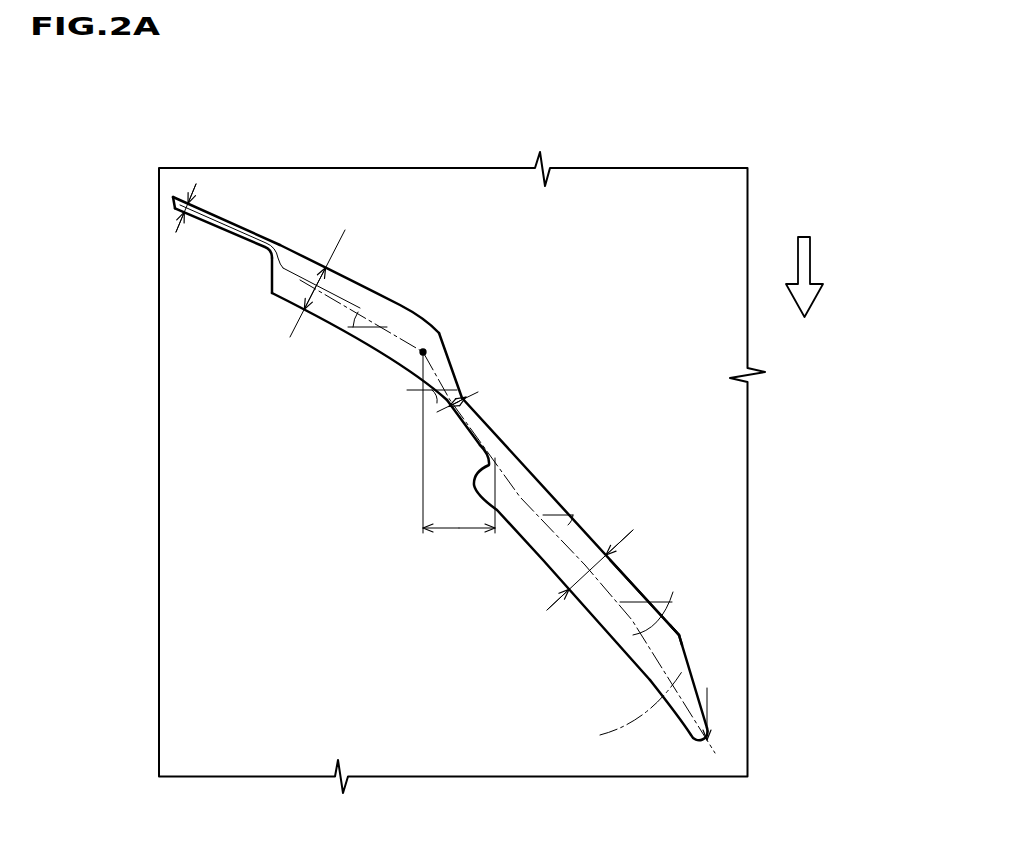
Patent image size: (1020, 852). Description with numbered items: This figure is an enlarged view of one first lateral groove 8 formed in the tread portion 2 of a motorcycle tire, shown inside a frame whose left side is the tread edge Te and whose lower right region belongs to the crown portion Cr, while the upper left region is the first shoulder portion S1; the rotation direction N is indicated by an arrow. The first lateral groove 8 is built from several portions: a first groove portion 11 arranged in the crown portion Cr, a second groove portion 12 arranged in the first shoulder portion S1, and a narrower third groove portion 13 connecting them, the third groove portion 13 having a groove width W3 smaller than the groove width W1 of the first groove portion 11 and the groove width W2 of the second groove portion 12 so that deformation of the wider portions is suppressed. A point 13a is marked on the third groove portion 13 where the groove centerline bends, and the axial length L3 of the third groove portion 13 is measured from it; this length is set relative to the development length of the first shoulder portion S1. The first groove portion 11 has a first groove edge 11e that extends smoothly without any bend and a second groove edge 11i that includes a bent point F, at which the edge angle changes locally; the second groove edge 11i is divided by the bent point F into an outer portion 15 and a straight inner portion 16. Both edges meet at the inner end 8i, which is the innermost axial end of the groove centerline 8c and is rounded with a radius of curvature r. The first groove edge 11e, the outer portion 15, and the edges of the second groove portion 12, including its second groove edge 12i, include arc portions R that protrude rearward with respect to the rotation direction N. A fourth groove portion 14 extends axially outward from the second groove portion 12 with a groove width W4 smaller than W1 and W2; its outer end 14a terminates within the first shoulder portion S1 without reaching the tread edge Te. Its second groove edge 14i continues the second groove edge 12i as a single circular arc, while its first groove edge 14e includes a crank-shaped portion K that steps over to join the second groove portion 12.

The tread portion 2 is at (450, 163).
The first lateral groove 8 is at (445, 468).
The groove centerline 8c is at (640, 728).
The inner end 8i is at (707, 742).
The first groove portion 11 is at (627, 540).
The second groove edge 11i is at (526, 466).
The first groove edge 11e is at (540, 556).
The second groove portion 12 is at (328, 294).
The second groove edge 12i is at (361, 305).
The third groove portion 13 is at (440, 412).
The connection point 13a is at (426, 349).
The fourth groove portion 14 is at (172, 212).
The outer end 14a is at (170, 200).
The first groove edge 14e is at (243, 236).
The second groove edge 14i is at (200, 207).
The outer portion 15 is at (657, 600).
The inner portion 16 is at (691, 672).
The crown portion Cr is at (610, 198).
The tread edge Te is at (158, 618).
The rotation direction N is at (804, 291).
The first shoulder portion S1 is at (287, 183).
The crank-shaped portion K is at (257, 263).
The bent point F is at (680, 633).
The groove width W1 is at (547, 610).
The groove width W2 is at (326, 266).
The groove width W3 is at (472, 400).
The groove width W4 is at (178, 228).
The length L3 is at (459, 460).
The arc portion R is at (590, 553).
The radius of curvature r is at (708, 700).